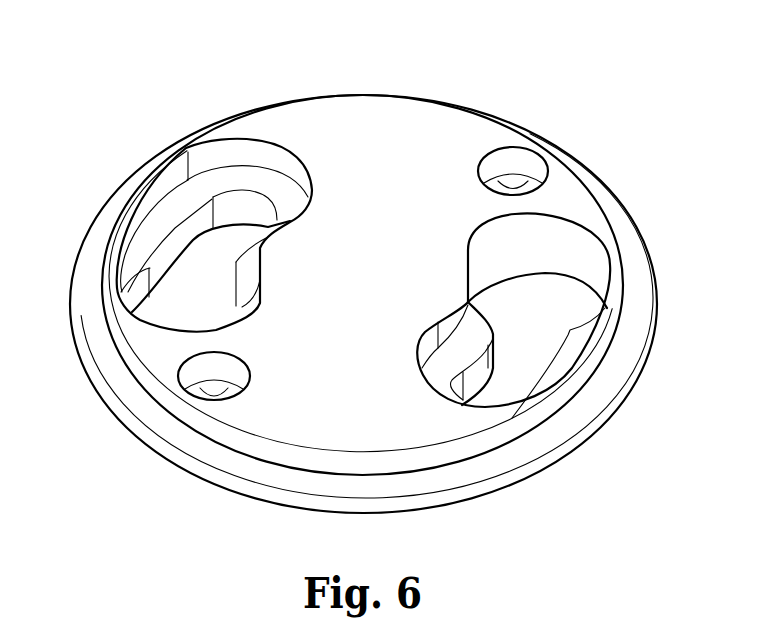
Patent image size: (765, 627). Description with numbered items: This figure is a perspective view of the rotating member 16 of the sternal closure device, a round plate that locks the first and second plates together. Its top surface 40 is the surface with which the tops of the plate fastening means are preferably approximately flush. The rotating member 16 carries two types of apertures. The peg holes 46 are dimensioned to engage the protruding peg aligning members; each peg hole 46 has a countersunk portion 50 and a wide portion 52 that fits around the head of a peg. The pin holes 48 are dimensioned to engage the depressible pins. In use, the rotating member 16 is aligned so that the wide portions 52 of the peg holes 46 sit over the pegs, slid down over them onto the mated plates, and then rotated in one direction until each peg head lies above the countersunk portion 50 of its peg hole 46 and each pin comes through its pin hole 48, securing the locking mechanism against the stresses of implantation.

The rotating member 16 is at (413, 97).
The top surface 40 is at (443, 135).
The peg hole 46 is at (528, 295).
The pin hole 48 is at (215, 395).
The countersunk portion 50 is at (180, 197).
The wide portion 52 is at (185, 312).